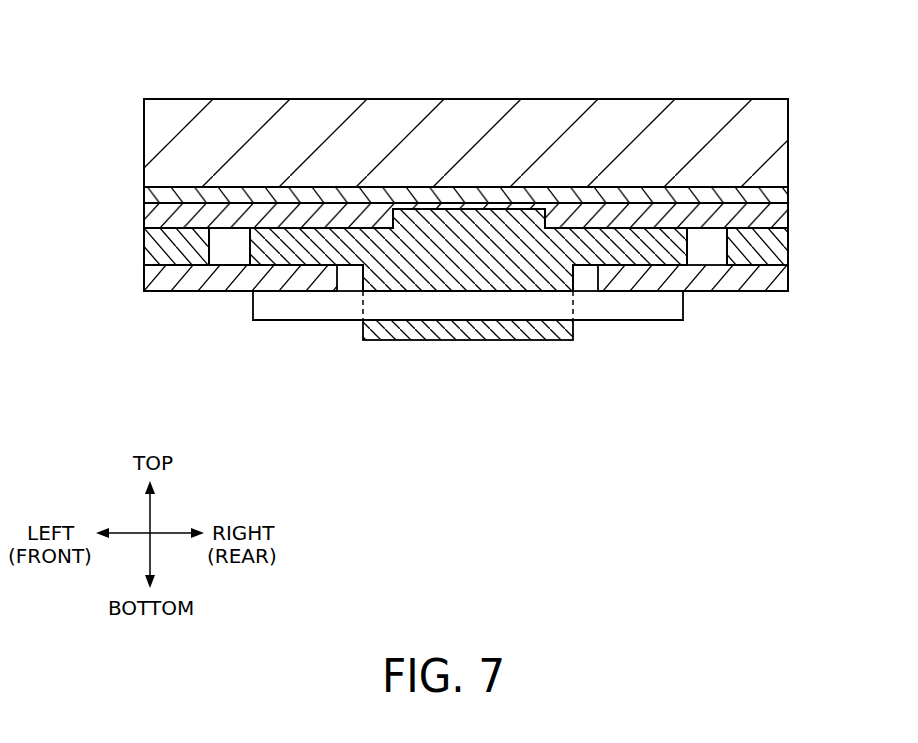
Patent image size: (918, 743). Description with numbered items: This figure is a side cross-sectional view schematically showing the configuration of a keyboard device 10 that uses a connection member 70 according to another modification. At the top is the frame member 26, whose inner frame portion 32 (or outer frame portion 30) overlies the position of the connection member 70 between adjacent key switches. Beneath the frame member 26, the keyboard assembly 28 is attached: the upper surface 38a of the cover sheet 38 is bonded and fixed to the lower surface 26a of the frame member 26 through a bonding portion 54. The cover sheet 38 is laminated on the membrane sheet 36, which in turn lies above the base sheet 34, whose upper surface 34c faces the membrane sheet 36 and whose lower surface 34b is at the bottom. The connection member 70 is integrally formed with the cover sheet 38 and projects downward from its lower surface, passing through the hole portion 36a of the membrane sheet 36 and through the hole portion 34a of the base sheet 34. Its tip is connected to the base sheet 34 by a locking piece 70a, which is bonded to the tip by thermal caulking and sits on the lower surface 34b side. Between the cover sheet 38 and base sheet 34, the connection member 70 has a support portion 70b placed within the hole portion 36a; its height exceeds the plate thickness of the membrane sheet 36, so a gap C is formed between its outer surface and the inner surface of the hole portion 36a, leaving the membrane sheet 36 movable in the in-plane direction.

The keyboard device 10 is at (461, 210).
The keyboard assembly 28 is at (95, 37).
The frame member 26 is at (768, 92).
The lower surface of the frame member 26a is at (642, 200).
The inner frame portion 32 is at (466, 112).
The outer frame portion 30 is at (298, 113).
The bonding portion 54 is at (212, 200).
The cover sheet 38 is at (760, 213).
The upper surface of the cover sheet 38a is at (393, 207).
The membrane sheet 36 is at (760, 245).
The hole portion 36a is at (210, 250).
The base sheet 34 is at (760, 280).
The hole portion 34a is at (341, 278).
The lower surface of the base sheet 34b is at (164, 292).
The upper surface of the base sheet 34c is at (742, 256).
The connection member 70 is at (478, 230).
The locking piece 70a is at (280, 304).
The support portion 70b is at (631, 250).
The gap C is at (707, 256).